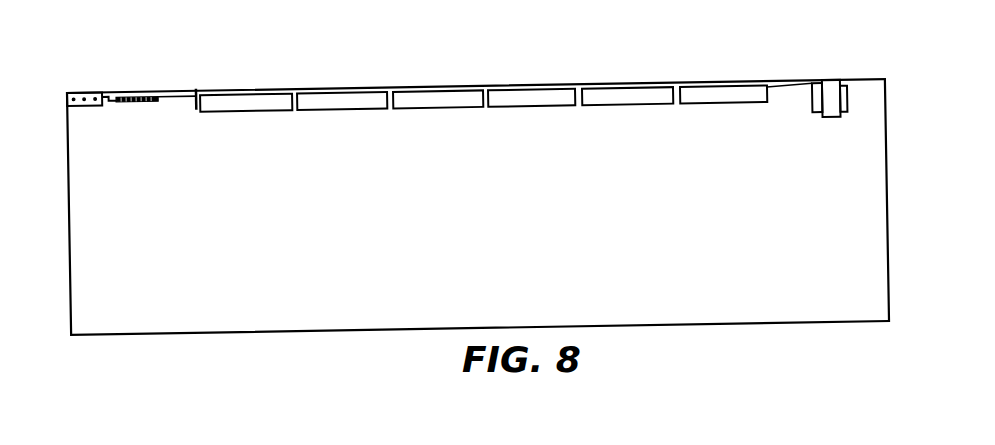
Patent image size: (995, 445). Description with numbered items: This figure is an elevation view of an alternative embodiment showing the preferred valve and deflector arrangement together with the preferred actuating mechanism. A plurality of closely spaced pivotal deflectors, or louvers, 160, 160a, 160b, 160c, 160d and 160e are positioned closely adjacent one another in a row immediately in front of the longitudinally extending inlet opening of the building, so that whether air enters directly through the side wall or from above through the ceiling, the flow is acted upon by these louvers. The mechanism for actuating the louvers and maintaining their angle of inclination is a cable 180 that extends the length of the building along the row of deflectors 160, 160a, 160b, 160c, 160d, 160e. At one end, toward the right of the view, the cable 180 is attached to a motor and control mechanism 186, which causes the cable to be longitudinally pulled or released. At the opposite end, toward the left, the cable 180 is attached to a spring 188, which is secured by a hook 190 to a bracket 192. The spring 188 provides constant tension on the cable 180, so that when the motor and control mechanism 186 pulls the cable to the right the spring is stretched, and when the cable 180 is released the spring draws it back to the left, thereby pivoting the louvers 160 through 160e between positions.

The bracket 192 is at (84, 93).
The hook 190 is at (108, 94).
The spring 188 is at (138, 94).
The cable 180 is at (179, 98).
The pivotal deflector 160e is at (241, 102).
The pivotal deflector 160d is at (335, 100).
The pivotal deflector 160c is at (425, 100).
The pivotal deflector 160b is at (515, 98).
The pivotal deflector 160a is at (617, 98).
The pivotal deflector 160 is at (724, 98).
The motor and control mechanism 186 is at (827, 95).